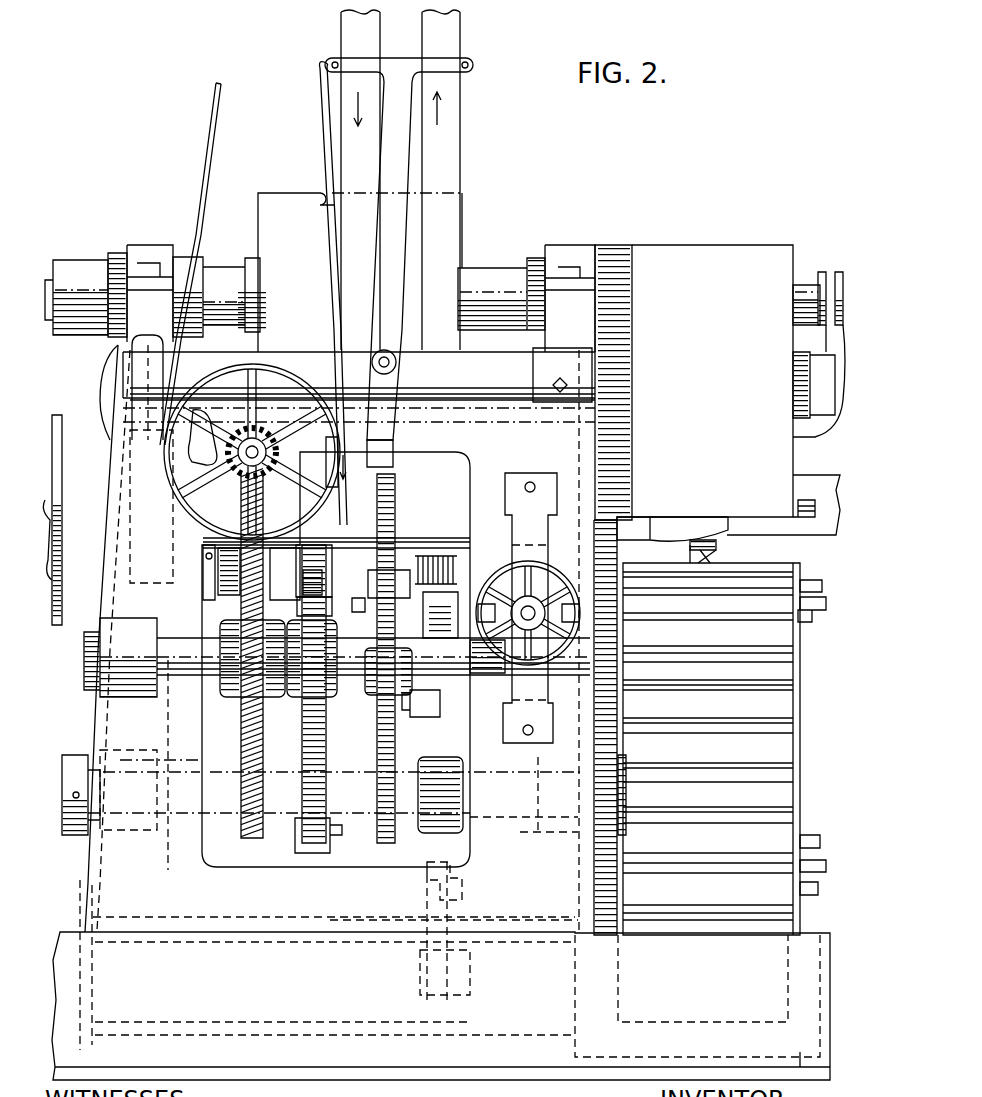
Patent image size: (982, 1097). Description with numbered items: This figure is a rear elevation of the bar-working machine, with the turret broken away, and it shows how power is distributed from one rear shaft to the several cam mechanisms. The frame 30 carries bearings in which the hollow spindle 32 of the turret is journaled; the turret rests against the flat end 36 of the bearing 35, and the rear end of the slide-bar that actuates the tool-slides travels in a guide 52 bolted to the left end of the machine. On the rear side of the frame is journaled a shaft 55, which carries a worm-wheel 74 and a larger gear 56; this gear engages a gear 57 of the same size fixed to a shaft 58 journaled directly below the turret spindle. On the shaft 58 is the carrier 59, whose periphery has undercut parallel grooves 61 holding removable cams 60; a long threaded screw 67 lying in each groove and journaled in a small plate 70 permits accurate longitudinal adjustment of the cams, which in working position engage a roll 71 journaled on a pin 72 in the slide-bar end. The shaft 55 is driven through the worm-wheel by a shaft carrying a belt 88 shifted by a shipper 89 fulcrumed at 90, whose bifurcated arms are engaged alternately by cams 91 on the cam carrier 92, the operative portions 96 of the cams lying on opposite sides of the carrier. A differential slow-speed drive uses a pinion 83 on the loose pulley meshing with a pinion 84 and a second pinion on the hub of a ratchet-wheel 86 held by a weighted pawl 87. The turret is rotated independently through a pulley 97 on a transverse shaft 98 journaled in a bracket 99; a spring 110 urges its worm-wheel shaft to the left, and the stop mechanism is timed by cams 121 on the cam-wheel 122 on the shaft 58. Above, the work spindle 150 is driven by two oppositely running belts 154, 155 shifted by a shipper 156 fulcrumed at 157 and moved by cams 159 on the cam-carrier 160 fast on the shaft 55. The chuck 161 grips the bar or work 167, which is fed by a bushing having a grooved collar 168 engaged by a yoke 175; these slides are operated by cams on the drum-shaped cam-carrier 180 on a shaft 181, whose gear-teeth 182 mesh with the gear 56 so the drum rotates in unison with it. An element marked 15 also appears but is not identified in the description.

The frame plate 15 is at (344, 788).
The frame 30 is at (88, 876).
The hollow spindle 32 is at (413, 500).
The bearing 35 is at (62, 622).
The flat end of the bearing 36 is at (52, 455).
The guide 52 is at (814, 525).
The shaft 55 is at (230, 680).
The larger gear 56 is at (598, 712).
The gear 57 is at (602, 893).
The shaft 58 is at (337, 800).
The carrier 59 is at (755, 750).
The cams 60 is at (718, 552).
The parallel grooves 61 is at (778, 650).
The threaded screw 67 is at (815, 588).
The small plate 70 is at (800, 618).
The roll 71 is at (728, 532).
The pin 72 is at (692, 543).
The worm-wheel 74 is at (260, 742).
The pinion 83 is at (226, 458).
The pinion 84 is at (290, 378).
The ratchet-wheel 86 is at (232, 488).
The weighted pawl 87 is at (236, 406).
The belt 88 is at (212, 163).
The shipper 89 is at (330, 295).
The fulcrum 90 is at (345, 450).
The cams 91 is at (262, 700).
The cam carrier 92 is at (324, 706).
The operative portions 96 is at (297, 650).
The pulley 97 is at (560, 580).
The transverse shaft 98 is at (497, 676).
The bracket 99 is at (536, 530).
The spring 110 is at (413, 560).
The cams 121 is at (455, 600).
The carrier or cam-wheel 122 is at (442, 800).
The spindle 150 is at (490, 272).
The belt 154 is at (368, 32).
The belt 155 is at (445, 24).
The shipper 156 is at (395, 220).
The fulcrum 157 is at (400, 328).
The cams 159 is at (368, 597).
The cam-carrier 160 is at (388, 730).
The chuck 161 is at (80, 258).
The bar or work 167 is at (47, 280).
The grooved collar 168 is at (830, 272).
The yoke 175 is at (825, 432).
The cam-carrier 180 is at (738, 262).
The shaft 181 is at (490, 387).
The gear-teeth 182 is at (608, 245).